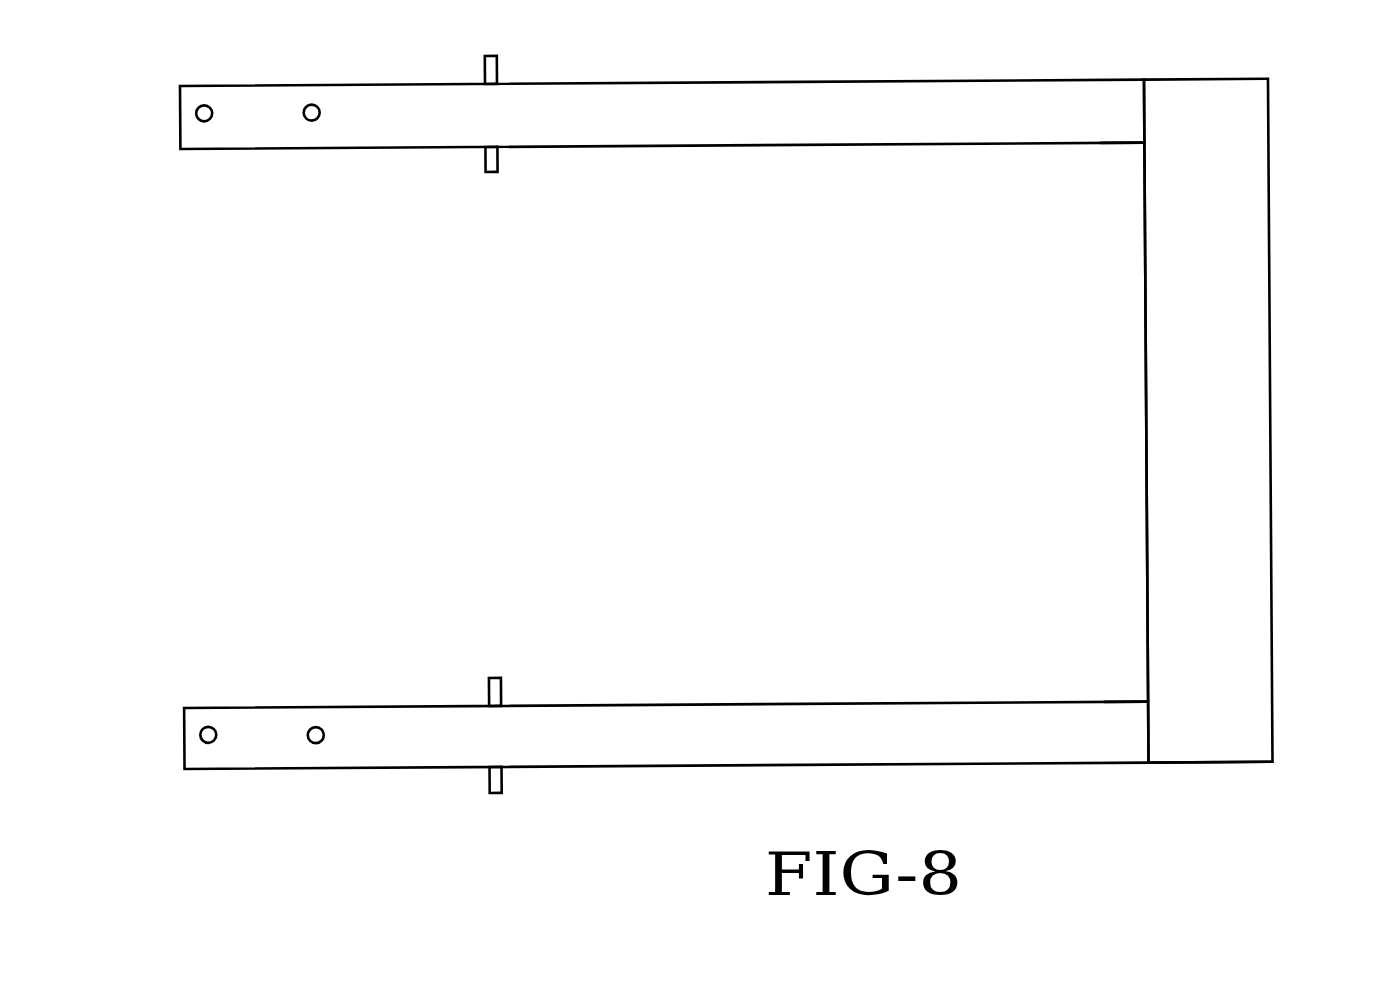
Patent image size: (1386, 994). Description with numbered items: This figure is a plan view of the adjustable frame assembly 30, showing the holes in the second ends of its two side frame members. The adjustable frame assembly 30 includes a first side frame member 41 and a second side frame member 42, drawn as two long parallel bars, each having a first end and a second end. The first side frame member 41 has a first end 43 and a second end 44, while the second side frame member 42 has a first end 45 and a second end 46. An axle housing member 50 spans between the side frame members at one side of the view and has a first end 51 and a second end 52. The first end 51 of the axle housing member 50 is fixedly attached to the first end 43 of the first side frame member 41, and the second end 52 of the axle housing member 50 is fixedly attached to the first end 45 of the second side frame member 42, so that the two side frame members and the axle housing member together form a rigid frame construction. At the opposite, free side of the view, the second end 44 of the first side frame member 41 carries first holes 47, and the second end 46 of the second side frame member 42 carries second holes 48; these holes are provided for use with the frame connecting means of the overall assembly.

The adjustable frame assembly 30 is at (280, 434).
The first side frame member 41 is at (715, 720).
The second side frame member 42 is at (755, 132).
The first end of first side frame member 43 is at (1112, 715).
The second end of first side frame member 44 is at (195, 715).
The first end of second side frame member 45 is at (1116, 130).
The second end of second side frame member 46 is at (189, 133).
The first holes 47 is at (316, 733).
The second holes 48 is at (318, 118).
The axle housing member 50 is at (1165, 433).
The first end of axle housing member 51 is at (1237, 737).
The second end of axle housing member 52 is at (1252, 107).